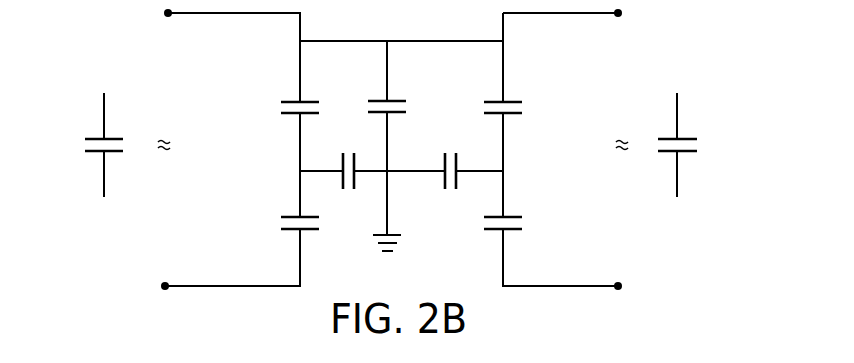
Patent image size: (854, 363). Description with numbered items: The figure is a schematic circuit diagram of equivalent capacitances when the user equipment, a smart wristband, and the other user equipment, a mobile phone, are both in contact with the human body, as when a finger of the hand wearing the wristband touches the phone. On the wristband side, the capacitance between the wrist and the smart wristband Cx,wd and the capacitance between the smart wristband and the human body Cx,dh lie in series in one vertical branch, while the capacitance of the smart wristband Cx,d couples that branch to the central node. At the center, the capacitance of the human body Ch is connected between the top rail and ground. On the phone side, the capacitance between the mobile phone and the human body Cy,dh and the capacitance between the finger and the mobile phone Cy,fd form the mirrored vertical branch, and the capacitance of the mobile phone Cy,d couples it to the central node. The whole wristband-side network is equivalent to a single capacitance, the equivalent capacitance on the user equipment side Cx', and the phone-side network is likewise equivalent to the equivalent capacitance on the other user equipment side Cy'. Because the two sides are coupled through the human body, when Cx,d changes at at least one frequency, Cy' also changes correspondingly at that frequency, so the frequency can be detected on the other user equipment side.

The equivalent capacitance on the user equipment side Cx' is at (90, 145).
The equivalent capacitance on the other user equipment side Cy' is at (700, 145).
The capacitance between the smart wristband and the human body Cx,dh is at (267, 106).
The capacitance between the wrist and the smart wristband Cx,wd is at (265, 222).
The capacitance of the human body Ch is at (371, 106).
The capacitance of the smart wristband Cx,d is at (348, 183).
The capacitance of the mobile phone Cy,d is at (450, 183).
The capacitance between the mobile phone and the human body Cy,dh is at (535, 106).
The capacitance between the finger and the mobile phone Cy,fd is at (534, 222).